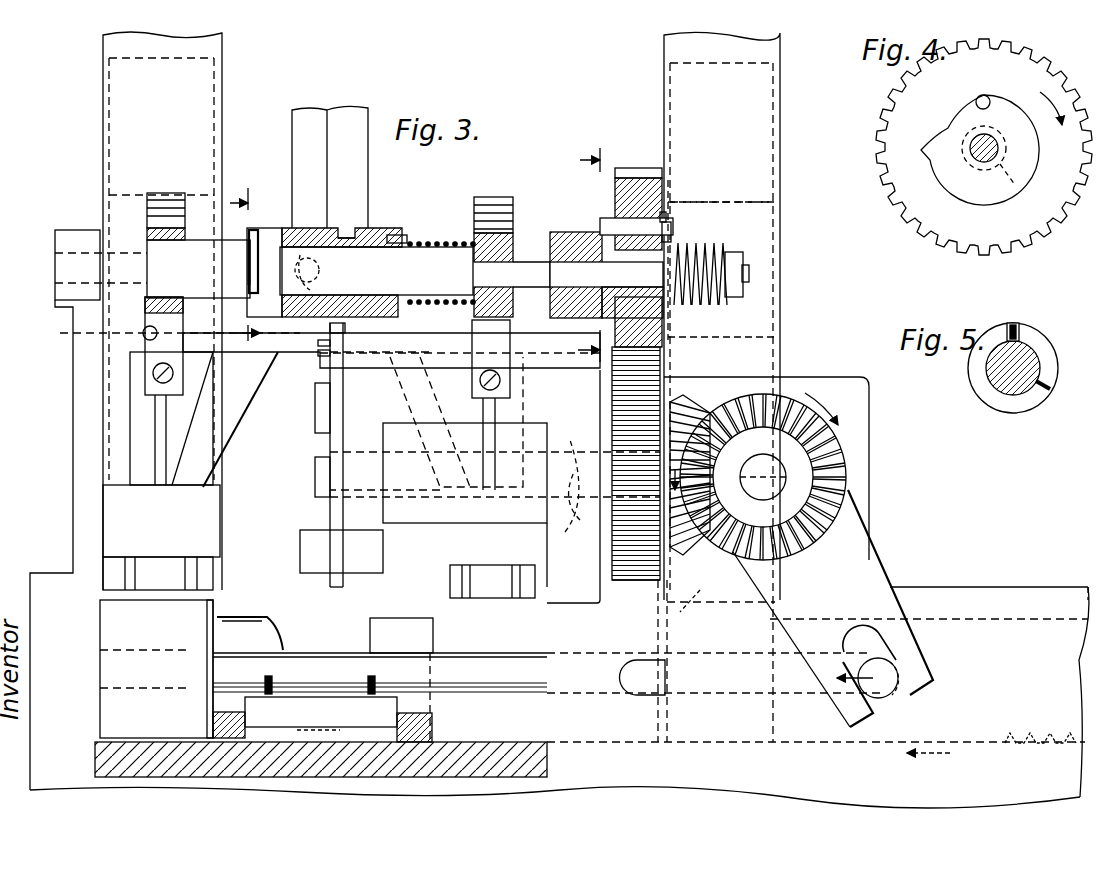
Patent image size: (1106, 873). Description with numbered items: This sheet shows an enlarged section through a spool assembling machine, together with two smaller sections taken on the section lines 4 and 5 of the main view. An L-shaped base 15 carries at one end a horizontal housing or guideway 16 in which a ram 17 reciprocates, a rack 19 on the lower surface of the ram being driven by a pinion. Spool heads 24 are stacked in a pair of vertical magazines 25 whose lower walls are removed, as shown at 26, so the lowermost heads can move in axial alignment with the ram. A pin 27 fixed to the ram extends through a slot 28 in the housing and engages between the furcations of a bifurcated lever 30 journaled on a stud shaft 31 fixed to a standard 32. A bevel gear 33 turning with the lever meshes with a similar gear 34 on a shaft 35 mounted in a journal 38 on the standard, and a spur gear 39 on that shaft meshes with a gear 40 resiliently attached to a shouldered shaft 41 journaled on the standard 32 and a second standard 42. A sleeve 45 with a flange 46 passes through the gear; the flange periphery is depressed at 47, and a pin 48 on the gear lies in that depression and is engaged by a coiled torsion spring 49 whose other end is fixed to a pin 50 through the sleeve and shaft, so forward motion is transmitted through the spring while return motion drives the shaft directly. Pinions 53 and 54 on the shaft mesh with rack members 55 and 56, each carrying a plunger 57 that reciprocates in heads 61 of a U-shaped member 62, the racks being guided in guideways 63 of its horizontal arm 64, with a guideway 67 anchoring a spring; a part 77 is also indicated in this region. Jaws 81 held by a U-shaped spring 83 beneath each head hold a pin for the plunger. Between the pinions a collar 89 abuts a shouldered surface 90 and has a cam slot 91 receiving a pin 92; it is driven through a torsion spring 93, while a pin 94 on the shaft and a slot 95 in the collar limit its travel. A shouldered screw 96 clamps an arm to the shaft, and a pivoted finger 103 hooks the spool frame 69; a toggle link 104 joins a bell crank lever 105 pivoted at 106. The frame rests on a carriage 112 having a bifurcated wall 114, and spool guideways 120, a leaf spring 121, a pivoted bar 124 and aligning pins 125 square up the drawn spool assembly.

In FIG. 3, the section line 4— 4 is at (587, 256).
In FIG. 3, the section line 5— 5 is at (246, 271).
In FIG. 3, the L-shaped base 15 is at (50, 600).
In FIG. 3, the horizontal housing or guideway 16 is at (960, 587).
In FIG. 3, the ram 17 is at (1100, 595).
In FIG. 3, the rack 19 is at (1045, 745).
In FIG. 3, the spool heads 24 is at (112, 638).
In FIG. 3, the vertical magazines 25 is at (222, 58).
In FIG. 3, the removed wall portions 26 is at (210, 605).
In FIG. 3, the pin 27 is at (885, 698).
In FIG. 3, the slot 28 is at (722, 693).
In FIG. 3, the bifurcated lever 30 is at (880, 562).
In FIG. 3, the stud shaft 31 is at (785, 483).
In FIG. 3, the standard 32 is at (848, 368).
In FIG. 3, the bevel gear 33 is at (830, 447).
In FIG. 3, the bevel gear 34 is at (690, 400).
In FIG. 3, the shaft 35 is at (565, 523).
In FIG. 3, the journal 38 is at (415, 523).
In FIG. 3, the spur gear 39 is at (632, 582).
In FIG. 3, the gear 40 is at (635, 175).
In FIG. 4, the gear 40 is at (880, 125).
In FIG. 3, the shouldered shaft 41 is at (185, 240).
In FIG. 4, the shouldered shaft 41 is at (975, 150).
In FIG. 5, the shouldered shaft 41 is at (1000, 368).
In FIG. 3, the standard 42 is at (75, 238).
In FIG. 3, the sleeve 45 is at (738, 260).
In FIG. 4, the sleeve 45 is at (1015, 178).
In FIG. 3, the flange 46 is at (605, 222).
In FIG. 4, the flange 46 is at (960, 200).
In FIG. 3, the depressed peripheral portion 47 is at (630, 215).
In FIG. 4, the depressed peripheral portion 47 is at (945, 125).
In FIG. 3, the pin 48 is at (660, 232).
In FIG. 4, the pin 48 is at (985, 98).
In FIG. 3, the coiled torsion spring 49 is at (700, 250).
In FIG. 3, the pin 50 is at (749, 275).
In FIG. 3, the pinion 53 is at (405, 240).
In FIG. 3, the pinion 54 is at (150, 230).
In FIG. 3, the rack member 55 is at (495, 197).
In FIG. 3, the rack member 56 is at (165, 195).
In FIG. 3, the plunger 57 is at (160, 415).
In FIG. 3, the heads 61 is at (220, 520).
In FIG. 3, the U-shaped member 62 is at (110, 345).
In FIG. 3, the guideways 63 is at (150, 333).
In FIG. 3, the horizontal arm 64 is at (290, 370).
In FIG. 3, the guideway 67 is at (345, 110).
In FIG. 3, the spool frame 69 is at (512, 656).
In FIG. 3, the slide 77 is at (205, 428).
In FIG. 3, the jaws 81 is at (490, 598).
In FIG. 3, the U-shaped spring 83 is at (195, 575).
In FIG. 3, the collar 89 is at (372, 240).
In FIG. 5, the collar 89 is at (990, 398).
In FIG. 3, the shouldered surface 90 is at (250, 266).
In FIG. 3, the cam slot 91 is at (352, 233).
In FIG. 3, the pin 92 is at (320, 270).
In FIG. 3, the torsion spring 93 is at (445, 303).
In FIG. 3, the pin 94 is at (253, 232).
In FIG. 5, the pin 94 is at (1013, 325).
In FIG. 3, the slot 95 is at (258, 265).
In FIG. 5, the slot 95 is at (1050, 360).
In FIG. 3, the shouldered screw 96 is at (315, 490).
In FIG. 3, the finger 103 is at (403, 575).
In FIG. 3, the toggle link 104 is at (320, 403).
In FIG. 3, the bell crank lever 105 is at (333, 370).
In FIG. 3, the pivot 106 is at (340, 327).
In FIG. 3, the carriage 112 is at (433, 633).
In FIG. 3, the bifurcated wall 114 is at (430, 708).
In FIG. 3, the spool guideways 120 is at (215, 725).
In FIG. 3, the leaf spring 121 is at (305, 727).
In FIG. 3, the bar 124 is at (380, 675).
In FIG. 3, the pins 125 is at (290, 678).